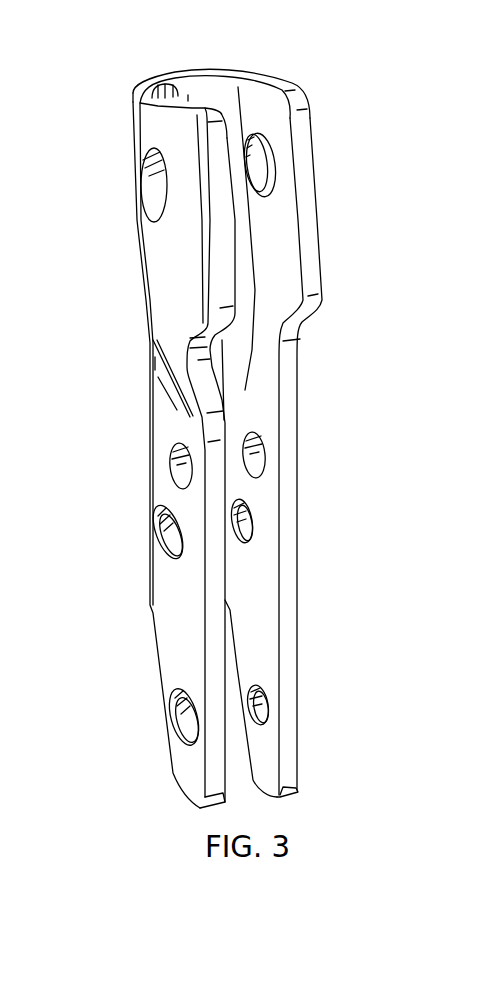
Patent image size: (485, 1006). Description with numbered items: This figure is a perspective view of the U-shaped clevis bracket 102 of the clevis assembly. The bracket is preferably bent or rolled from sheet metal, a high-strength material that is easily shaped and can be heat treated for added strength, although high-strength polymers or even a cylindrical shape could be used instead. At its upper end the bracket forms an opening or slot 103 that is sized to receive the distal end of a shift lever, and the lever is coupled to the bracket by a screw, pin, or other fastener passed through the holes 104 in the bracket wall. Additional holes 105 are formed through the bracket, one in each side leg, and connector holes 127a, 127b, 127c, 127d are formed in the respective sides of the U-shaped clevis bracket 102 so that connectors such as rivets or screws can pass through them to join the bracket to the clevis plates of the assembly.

The U-shaped clevis bracket 102 is at (132, 115).
The opening or slot 103 is at (227, 91).
The holes 104 is at (268, 157).
The openings 105 is at (171, 463).
The connector hole 127a is at (158, 538).
The connector hole 127b is at (173, 715).
The connector hole 127c is at (253, 521).
The connector hole 127d is at (268, 707).